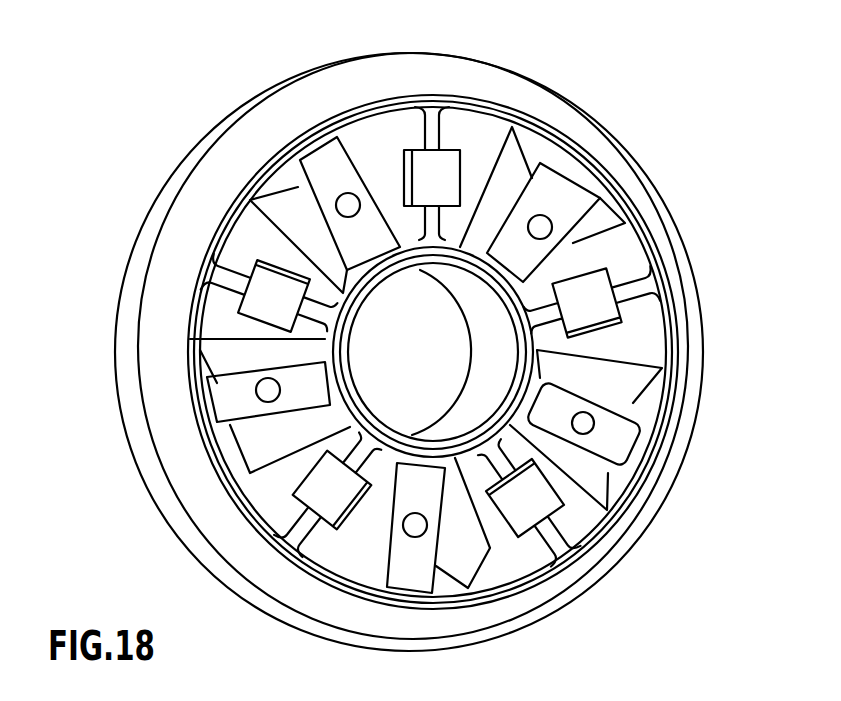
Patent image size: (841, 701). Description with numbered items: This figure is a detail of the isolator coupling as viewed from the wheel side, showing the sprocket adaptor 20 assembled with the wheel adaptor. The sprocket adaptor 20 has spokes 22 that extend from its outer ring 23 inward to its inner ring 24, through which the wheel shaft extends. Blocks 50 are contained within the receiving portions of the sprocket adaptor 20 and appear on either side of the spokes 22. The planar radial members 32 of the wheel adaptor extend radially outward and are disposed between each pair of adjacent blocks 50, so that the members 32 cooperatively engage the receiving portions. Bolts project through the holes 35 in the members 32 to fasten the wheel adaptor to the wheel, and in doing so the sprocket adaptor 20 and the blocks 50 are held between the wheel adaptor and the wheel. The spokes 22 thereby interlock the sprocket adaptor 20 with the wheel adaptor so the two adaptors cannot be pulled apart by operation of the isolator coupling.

The sprocket adaptor 20 is at (565, 97).
The spokes 22 is at (432, 137).
The outer ring 23 is at (703, 338).
The inner ring 24 is at (500, 328).
The planar radial members 32 is at (348, 203).
The holes 35 is at (541, 228).
The blocks 50 is at (573, 513).